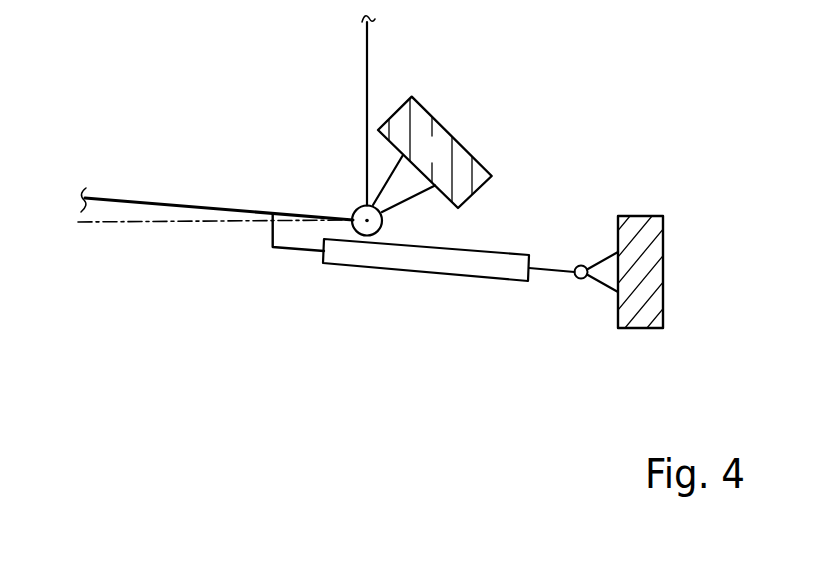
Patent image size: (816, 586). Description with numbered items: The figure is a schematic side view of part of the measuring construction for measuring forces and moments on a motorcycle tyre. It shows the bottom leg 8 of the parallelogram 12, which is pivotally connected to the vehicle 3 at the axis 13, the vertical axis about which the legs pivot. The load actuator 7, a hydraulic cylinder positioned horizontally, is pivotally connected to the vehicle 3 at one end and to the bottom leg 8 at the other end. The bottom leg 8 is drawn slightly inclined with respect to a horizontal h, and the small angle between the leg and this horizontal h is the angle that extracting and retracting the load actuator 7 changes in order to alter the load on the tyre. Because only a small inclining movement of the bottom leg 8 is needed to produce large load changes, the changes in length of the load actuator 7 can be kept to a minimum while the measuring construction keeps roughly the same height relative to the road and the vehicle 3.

The vehicle 3 is at (442, 167).
The load actuator 7 is at (440, 260).
The bottom leg 8 is at (177, 203).
The parallelogram 12 is at (366, 43).
The axis 13 is at (367, 236).
The horizontal h is at (177, 226).